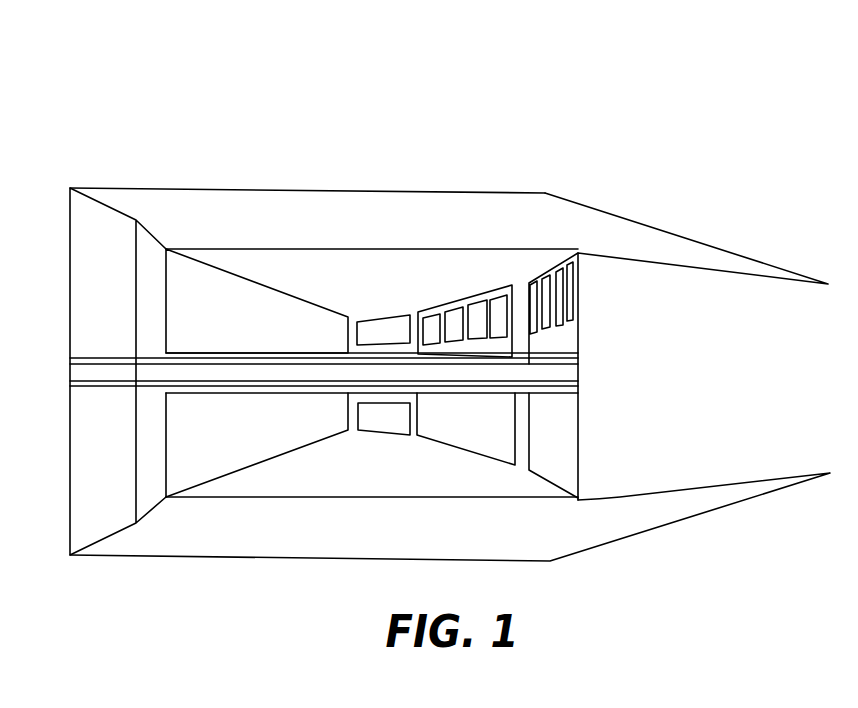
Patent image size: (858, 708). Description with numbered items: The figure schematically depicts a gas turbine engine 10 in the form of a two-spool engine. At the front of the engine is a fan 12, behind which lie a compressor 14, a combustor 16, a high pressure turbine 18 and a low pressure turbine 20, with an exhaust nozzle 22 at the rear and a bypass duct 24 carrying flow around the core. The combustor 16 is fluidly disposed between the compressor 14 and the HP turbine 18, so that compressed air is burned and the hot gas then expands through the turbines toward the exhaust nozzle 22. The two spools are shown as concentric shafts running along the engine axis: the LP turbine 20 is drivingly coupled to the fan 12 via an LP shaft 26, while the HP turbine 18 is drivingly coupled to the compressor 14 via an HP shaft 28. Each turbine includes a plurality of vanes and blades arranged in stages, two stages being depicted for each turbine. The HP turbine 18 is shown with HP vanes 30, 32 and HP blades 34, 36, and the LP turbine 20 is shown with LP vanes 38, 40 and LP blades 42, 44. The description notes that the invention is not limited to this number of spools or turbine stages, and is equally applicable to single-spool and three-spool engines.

The gas turbine engine 10 is at (138, 70).
The fan 12 is at (105, 200).
The compressor 14 is at (263, 287).
The combustor 16 is at (393, 435).
The high pressure (HP) turbine 18 is at (460, 452).
The low pressure (LP) turbine 20 is at (548, 484).
The exhaust nozzle 22 is at (716, 270).
The bypass duct 24 is at (195, 213).
The LP shaft 26 is at (525, 400).
The HP shaft 28 is at (352, 433).
The HP vane 30 is at (427, 318).
The HP vane 32 is at (475, 303).
The HP blade 34 is at (450, 310).
The HP blade 36 is at (500, 298).
The LP vane 38 is at (532, 283).
The LP vane 40 is at (559, 268).
The LP blade 42 is at (543, 275).
The LP blade 44 is at (575, 254).